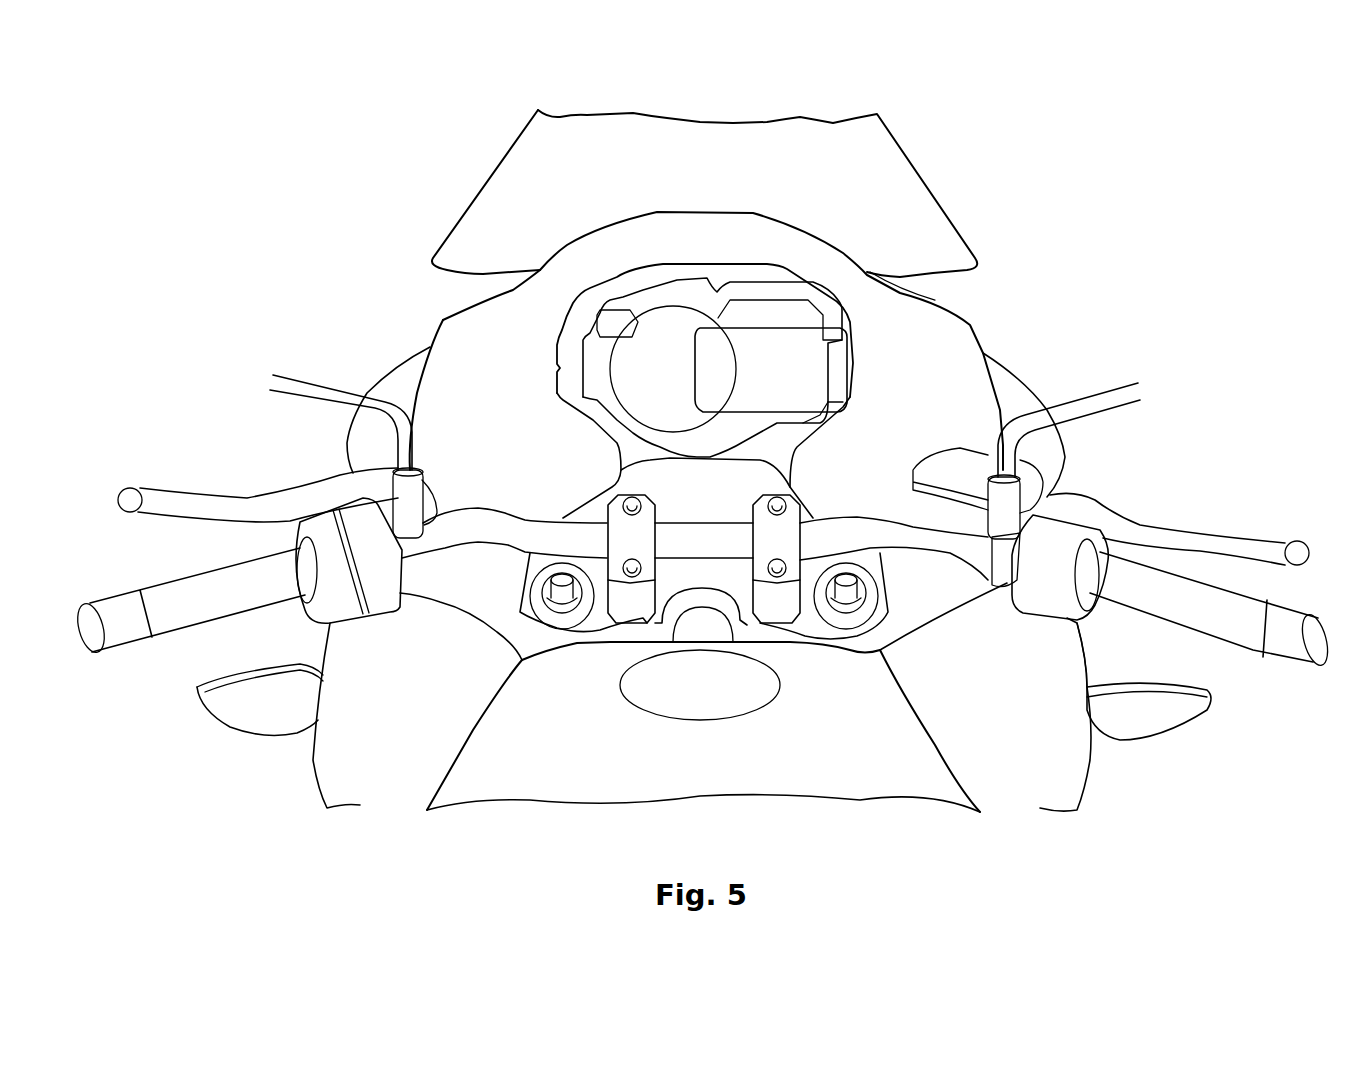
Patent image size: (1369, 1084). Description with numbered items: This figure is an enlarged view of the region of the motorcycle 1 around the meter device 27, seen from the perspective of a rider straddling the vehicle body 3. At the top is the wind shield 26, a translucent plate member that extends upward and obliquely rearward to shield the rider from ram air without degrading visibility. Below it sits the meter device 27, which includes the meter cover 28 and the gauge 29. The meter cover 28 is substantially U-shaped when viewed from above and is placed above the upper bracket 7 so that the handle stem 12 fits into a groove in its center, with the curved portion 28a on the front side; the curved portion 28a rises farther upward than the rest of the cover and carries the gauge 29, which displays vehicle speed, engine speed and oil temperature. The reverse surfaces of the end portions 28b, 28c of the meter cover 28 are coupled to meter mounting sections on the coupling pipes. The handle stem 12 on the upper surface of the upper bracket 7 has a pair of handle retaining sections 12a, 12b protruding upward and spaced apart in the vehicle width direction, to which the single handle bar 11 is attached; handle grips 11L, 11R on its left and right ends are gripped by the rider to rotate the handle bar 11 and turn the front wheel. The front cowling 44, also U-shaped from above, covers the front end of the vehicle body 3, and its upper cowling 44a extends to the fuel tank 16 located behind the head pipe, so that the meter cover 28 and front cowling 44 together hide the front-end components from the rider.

The motorcycle 1 is at (1124, 250).
The vehicle body 3 is at (955, 725).
The upper bracket 7 is at (562, 640).
The handle bar 11 is at (860, 533).
The left handle grip 11L is at (213, 603).
The right handle grip 11R is at (1197, 613).
The handle stem 12 is at (809, 479).
The handle retaining section 12a is at (630, 615).
The handle retaining section 12b is at (777, 617).
The fuel tank 16 is at (852, 790).
The wind shield 26 is at (897, 177).
The meter device 27 is at (1003, 302).
The meter cover 28 is at (975, 337).
The curved portion 28a is at (880, 305).
The end portion of the meter cover 28b is at (457, 605).
The end portion of the meter cover 28c is at (950, 610).
The gauge 29 is at (818, 367).
The front cowling 44 is at (1028, 383).
The upper cowling 44a is at (1070, 647).